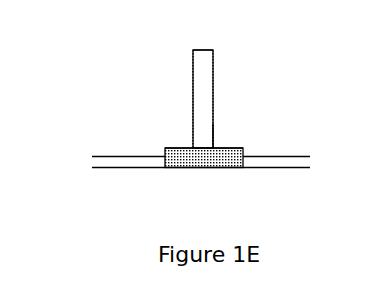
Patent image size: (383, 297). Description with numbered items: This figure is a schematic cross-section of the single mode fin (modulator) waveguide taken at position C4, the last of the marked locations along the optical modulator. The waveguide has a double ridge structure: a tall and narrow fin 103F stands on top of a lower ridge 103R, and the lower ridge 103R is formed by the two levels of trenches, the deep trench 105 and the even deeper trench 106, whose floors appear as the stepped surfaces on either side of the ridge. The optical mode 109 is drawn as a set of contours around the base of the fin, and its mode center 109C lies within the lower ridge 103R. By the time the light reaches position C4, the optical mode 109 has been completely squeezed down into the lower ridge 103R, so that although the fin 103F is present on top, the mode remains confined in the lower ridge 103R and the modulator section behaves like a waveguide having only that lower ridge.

The deeper trench 106 is at (125, 156).
The deep trench 105 is at (173, 148).
The optical mode 109 is at (185, 148).
The position C4 is at (202, 36).
The fin 103F is at (204, 78).
The optical mode center 109C is at (213, 124).
The lower ridge 103R is at (228, 147).